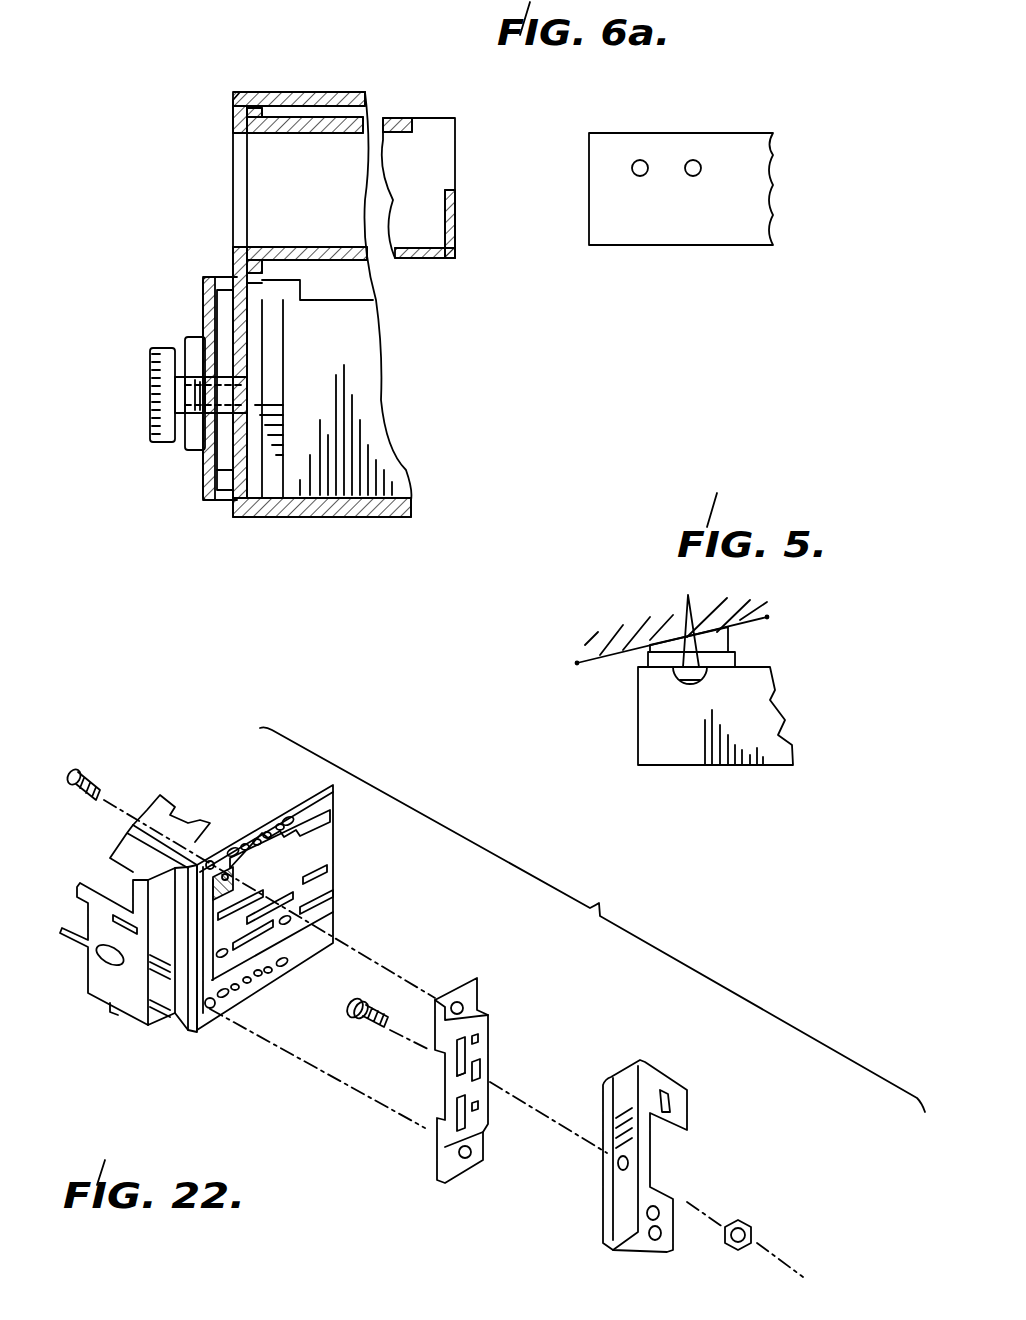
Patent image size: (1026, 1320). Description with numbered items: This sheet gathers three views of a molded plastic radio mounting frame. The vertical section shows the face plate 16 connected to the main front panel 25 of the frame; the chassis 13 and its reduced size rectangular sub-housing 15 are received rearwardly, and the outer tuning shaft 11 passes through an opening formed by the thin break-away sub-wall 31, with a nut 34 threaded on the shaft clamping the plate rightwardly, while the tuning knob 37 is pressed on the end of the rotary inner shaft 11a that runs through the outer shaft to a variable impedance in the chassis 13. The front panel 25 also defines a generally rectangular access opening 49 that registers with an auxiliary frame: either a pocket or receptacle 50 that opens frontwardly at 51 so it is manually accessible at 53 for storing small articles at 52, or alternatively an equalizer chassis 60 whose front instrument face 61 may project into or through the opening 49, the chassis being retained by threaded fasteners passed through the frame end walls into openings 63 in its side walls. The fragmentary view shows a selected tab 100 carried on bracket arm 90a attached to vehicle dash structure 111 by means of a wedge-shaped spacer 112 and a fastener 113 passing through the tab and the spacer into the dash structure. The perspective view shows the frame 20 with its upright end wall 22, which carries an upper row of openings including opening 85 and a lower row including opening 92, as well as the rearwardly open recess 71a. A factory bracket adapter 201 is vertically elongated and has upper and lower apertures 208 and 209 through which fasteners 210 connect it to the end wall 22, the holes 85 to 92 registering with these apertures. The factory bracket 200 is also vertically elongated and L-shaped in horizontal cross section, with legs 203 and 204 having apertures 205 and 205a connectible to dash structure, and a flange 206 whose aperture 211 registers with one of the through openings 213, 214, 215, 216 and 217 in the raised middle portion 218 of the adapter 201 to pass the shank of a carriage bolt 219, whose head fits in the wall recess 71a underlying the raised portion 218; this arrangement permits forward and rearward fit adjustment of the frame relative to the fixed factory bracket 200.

In FIG. 6A, the through (access) opening 49 is at (233, 147).
In FIG. 6A, the frontward opening of receptacle 51 is at (237, 190).
In FIG. 6A, the storage location 52 is at (326, 211).
In FIG. 6A, the manual access location 53 is at (205, 227).
In FIG. 6A, the pocket or receptacle 50 is at (440, 125).
In FIG. 6A, the chassis 13 is at (388, 411).
In FIG. 6A, the face plate 16 is at (198, 284).
In FIG. 6A, the nut 34 is at (188, 340).
In FIG. 6A, the tuning knob 37 is at (150, 372).
In FIG. 6A, the tuning shaft 11 is at (222, 377).
In FIG. 6A, the rotary inner shaft 11a is at (180, 400).
In FIG. 6A, the thin sub-wall 31 is at (228, 470).
In FIG. 6A, the main front panel 25 is at (236, 511).
In FIG. 6A, the rectangular sub-housing 15 is at (273, 465).
In FIG. 6A, the front (instrument) face 61 is at (589, 192).
In FIG. 6A, the openings in side walls of chassis 63 is at (690, 160).
In FIG. 6A, the equalizer chassis 60 is at (685, 212).
In FIG. 5, the bracket arm 90a is at (765, 758).
In FIG. 5, the tab 100 is at (735, 660).
In FIG. 5, the wedge-shaped spacer 112 is at (768, 632).
In FIG. 5, the dash structure 111 is at (632, 635).
In FIG. 5, the fastener 113 is at (677, 681).
In FIG. 22, the housing or frame 20 is at (120, 1030).
In FIG. 22, the end wall 22 is at (336, 867).
In FIG. 22, the rearward opening of recess 71a is at (334, 882).
In FIG. 22, the opening 85 is at (212, 861).
In FIG. 22, the opening 92 is at (209, 1009).
In FIG. 22, the fastener 210 is at (95, 780).
In FIG. 22, the carriage bolt 219 is at (360, 1022).
In FIG. 22, the factory bracket adapter 201 is at (498, 1045).
In FIG. 22, the upper aperture 208 is at (455, 1002).
In FIG. 22, the lower aperture 209 is at (463, 1158).
In FIG. 22, the through opening 213 is at (455, 1056).
In FIG. 22, the through opening 217 is at (452, 1108).
In FIG. 22, the raised middle portion 218 is at (453, 1088).
In FIG. 22, the through opening 214 is at (479, 1035).
In FIG. 22, the through opening 215 is at (482, 1067).
In FIG. 22, the through opening 216 is at (480, 1106).
In FIG. 22, the flange 206 is at (612, 1212).
In FIG. 22, the leg 203 is at (690, 1097).
In FIG. 22, the leg 204 is at (673, 1197).
In FIG. 22, the aperture 205 is at (663, 1090).
In FIG. 22, the aperture 205a is at (650, 1232).
In FIG. 22, the aperture 211 is at (468, 1150).
In FIG. 22, the factory bracket 200 is at (702, 1152).